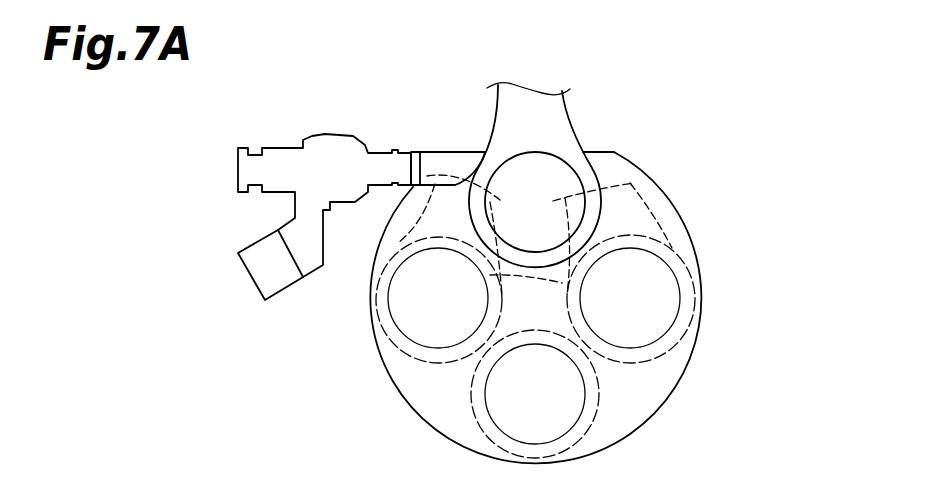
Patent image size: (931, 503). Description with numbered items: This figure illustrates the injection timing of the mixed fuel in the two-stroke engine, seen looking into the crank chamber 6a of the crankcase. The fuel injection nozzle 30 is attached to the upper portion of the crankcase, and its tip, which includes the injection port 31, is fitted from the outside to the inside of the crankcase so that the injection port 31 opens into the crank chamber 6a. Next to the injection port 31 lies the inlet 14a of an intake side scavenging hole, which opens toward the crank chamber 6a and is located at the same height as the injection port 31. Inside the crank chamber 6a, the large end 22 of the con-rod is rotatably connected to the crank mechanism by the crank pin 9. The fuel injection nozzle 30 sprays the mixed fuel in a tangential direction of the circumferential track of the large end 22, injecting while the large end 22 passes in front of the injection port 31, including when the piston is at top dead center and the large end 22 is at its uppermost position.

The fuel injection nozzle 30 is at (311, 131).
The injection port 31 is at (415, 152).
The inlet 14a is at (449, 167).
The crank pin 9 is at (537, 182).
The large end 22 is at (553, 200).
The crank chamber 6a is at (690, 231).